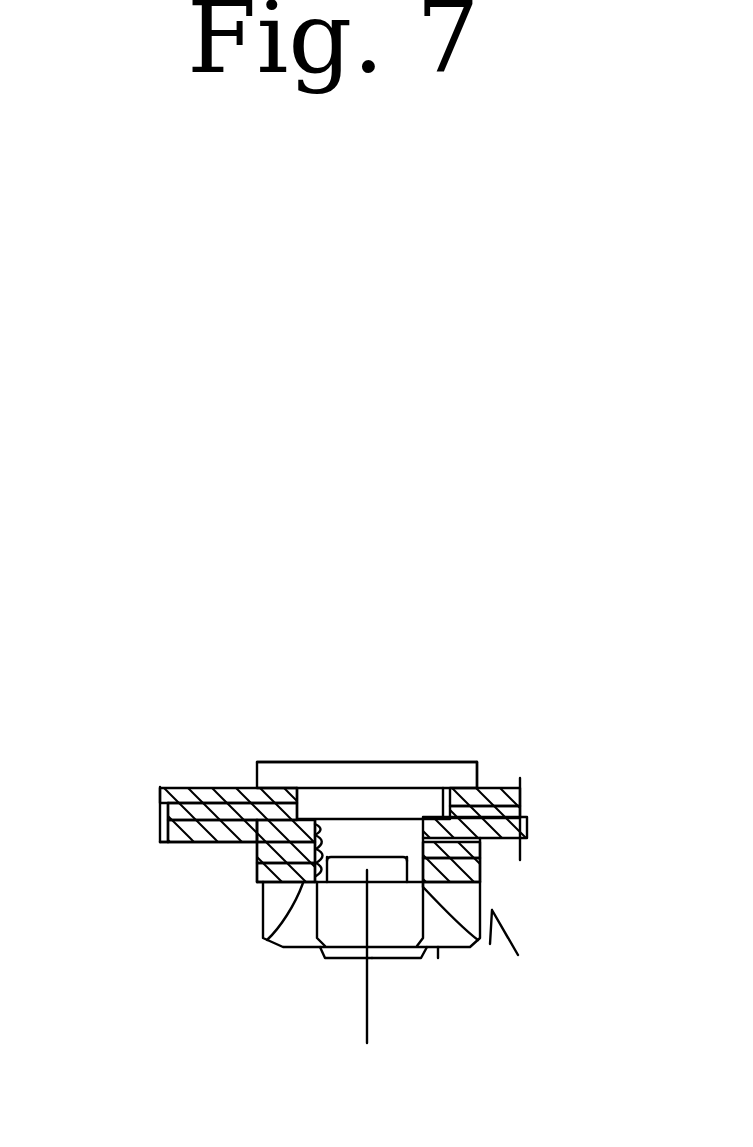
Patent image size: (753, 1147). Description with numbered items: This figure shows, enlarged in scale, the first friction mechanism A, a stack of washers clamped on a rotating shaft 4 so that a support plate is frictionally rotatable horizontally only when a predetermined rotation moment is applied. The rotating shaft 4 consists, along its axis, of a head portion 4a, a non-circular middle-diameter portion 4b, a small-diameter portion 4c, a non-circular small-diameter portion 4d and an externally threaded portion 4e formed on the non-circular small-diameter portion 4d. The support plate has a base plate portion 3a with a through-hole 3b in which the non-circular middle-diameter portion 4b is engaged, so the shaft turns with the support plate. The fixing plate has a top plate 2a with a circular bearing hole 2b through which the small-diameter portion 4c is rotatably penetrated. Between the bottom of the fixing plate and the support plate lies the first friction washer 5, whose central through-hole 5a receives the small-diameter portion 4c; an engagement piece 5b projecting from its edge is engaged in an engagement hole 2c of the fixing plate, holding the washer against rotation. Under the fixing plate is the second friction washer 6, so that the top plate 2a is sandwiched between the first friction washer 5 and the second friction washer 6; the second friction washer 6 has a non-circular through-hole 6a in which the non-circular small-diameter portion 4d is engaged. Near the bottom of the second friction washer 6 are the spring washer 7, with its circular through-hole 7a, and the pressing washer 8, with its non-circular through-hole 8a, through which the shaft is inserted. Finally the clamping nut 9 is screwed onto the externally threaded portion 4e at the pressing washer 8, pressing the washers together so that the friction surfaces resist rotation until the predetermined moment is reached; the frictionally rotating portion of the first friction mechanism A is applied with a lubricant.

The top plate 2a is at (526, 835).
The circular bearing hole 2b is at (258, 841).
The engagement hole 2c is at (215, 789).
The base plate portion 3a is at (505, 786).
The through-hole 3b is at (446, 800).
The rotating shaft 4 is at (374, 978).
The head portion 4a is at (367, 764).
The non-circular middle-diameter portion 4b is at (423, 763).
The small-diameter portion 4c is at (340, 826).
The non-circular small-diameter portion 4d is at (350, 960).
The externally threaded portion 4e is at (330, 952).
The first friction washer 5 is at (519, 807).
The through-hole 5a is at (297, 803).
The engagement piece 5b is at (162, 846).
The second friction washer 6 is at (485, 845).
The non-circular through-hole 6a is at (257, 873).
The spring washer 7 is at (487, 863).
The circular through-hole 7a is at (283, 944).
The pressing washer 8 is at (487, 880).
The non-circular through-hole 8a is at (476, 950).
The clamping nut 9 is at (440, 948).
The first friction mechanism A is at (500, 940).